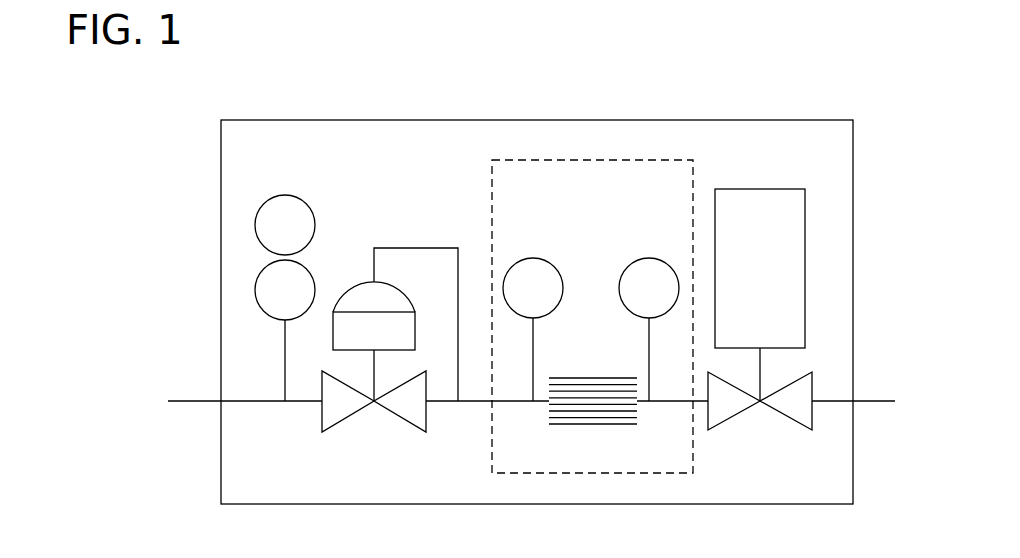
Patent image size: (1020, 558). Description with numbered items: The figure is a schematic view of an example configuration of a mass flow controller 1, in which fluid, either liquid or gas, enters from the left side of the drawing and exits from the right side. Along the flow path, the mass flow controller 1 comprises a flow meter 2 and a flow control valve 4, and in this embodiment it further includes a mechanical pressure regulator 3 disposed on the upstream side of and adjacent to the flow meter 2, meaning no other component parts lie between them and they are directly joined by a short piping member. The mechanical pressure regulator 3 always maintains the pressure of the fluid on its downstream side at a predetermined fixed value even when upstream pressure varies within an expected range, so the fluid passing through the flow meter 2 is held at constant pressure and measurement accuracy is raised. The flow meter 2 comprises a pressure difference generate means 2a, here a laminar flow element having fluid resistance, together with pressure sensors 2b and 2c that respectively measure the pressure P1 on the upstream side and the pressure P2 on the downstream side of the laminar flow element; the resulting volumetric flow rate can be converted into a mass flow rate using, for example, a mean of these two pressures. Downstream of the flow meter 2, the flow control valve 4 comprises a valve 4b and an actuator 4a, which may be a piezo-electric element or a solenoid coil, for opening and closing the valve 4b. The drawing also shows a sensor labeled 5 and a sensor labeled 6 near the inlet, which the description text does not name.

The mass flow controller 1 is at (676, 120).
The flow meter 2 is at (595, 160).
The pressure difference generate means 2a is at (590, 424).
The pressure sensor 2b is at (533, 258).
The pressure sensor 2c is at (650, 258).
The mechanical pressure regulator 3 is at (365, 282).
The flow control valve 4 is at (824, 309).
The actuator 4a is at (805, 298).
The valve 4b is at (812, 385).
The supply pressure sensor P0 5 is at (255, 291).
The temperature sensor T 6 is at (255, 225).